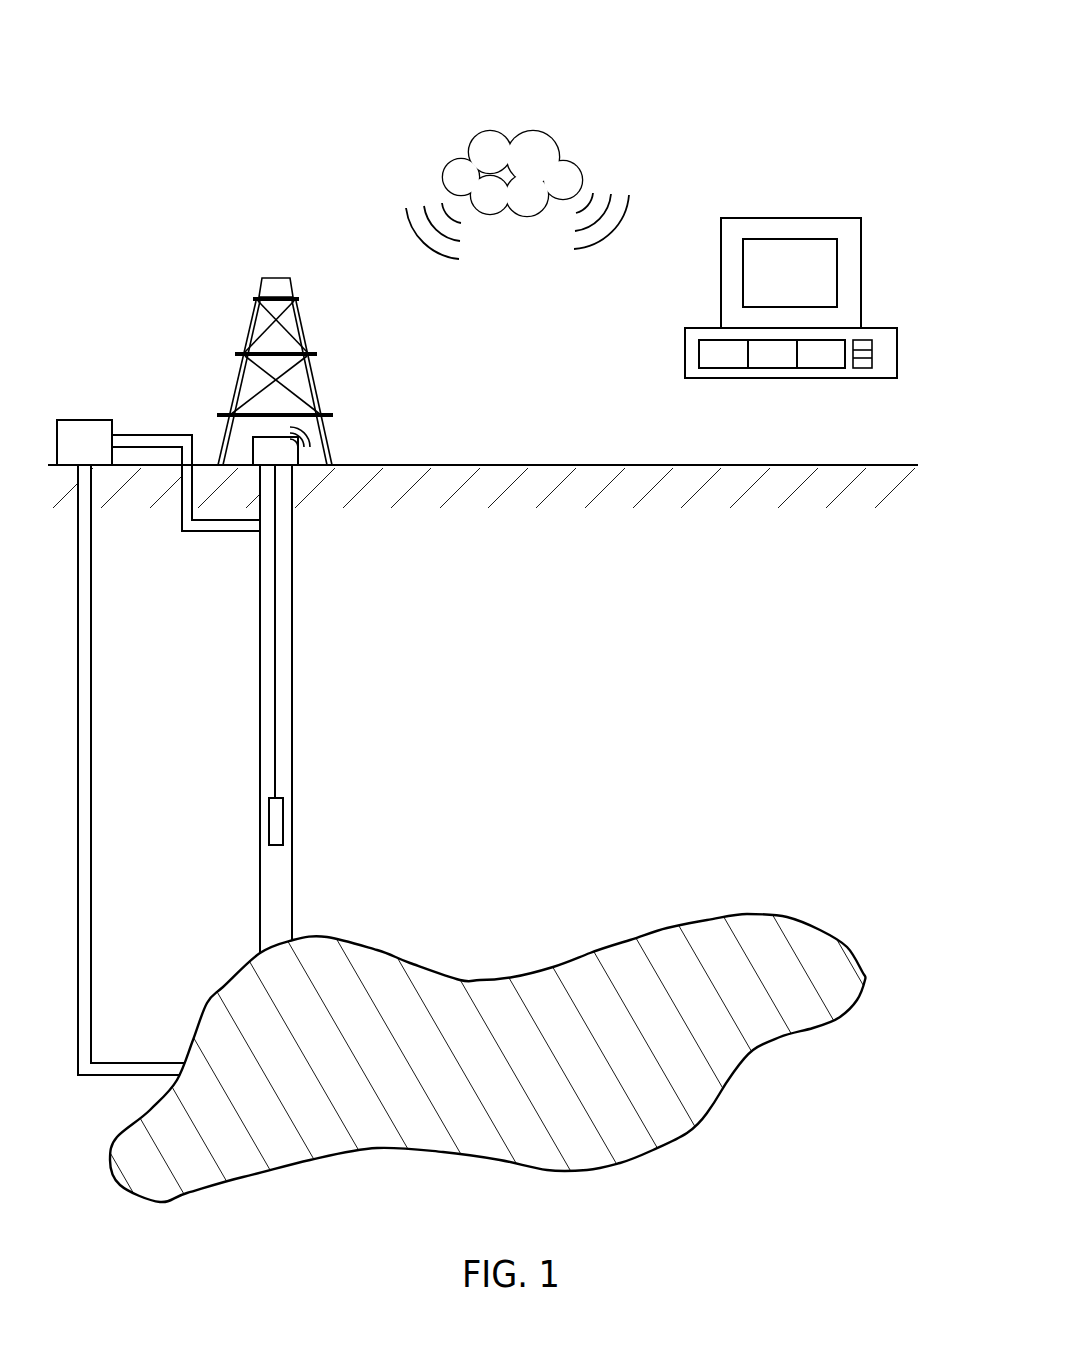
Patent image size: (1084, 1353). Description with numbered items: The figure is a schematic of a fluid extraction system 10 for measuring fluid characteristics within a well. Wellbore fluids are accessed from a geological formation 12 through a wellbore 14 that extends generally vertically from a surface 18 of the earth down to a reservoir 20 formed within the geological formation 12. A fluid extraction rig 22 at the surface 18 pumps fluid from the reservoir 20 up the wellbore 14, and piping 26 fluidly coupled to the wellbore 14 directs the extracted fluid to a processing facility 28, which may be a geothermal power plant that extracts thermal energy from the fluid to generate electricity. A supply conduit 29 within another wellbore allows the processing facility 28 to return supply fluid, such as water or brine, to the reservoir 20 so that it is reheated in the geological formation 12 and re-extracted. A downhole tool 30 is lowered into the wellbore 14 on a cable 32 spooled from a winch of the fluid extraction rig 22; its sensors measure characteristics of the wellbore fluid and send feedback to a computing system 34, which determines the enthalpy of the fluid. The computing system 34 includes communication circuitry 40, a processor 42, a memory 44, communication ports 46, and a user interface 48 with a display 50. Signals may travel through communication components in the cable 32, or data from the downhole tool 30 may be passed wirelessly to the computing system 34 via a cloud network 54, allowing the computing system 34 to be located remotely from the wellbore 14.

The fluid extraction system 10 is at (745, 67).
The geological formation 12 is at (532, 773).
The wellbore 14 is at (303, 745).
The surface 18 is at (498, 464).
The reservoir 20 is at (568, 960).
The fluid extraction rig 22 is at (303, 322).
The piping 26 is at (150, 434).
The processing facility 28 is at (70, 453).
The supply conduit 29 is at (95, 762).
The downhole tool 30 is at (285, 820).
The cable 32 is at (277, 553).
The computing system 34 is at (863, 193).
The communication circuitry 40 is at (718, 370).
The processor 42 is at (768, 370).
The memory 44 is at (820, 370).
The communication ports 46 is at (873, 350).
The user interface 48 is at (862, 270).
The display 50 is at (790, 238).
The cloud network 54 is at (495, 132).